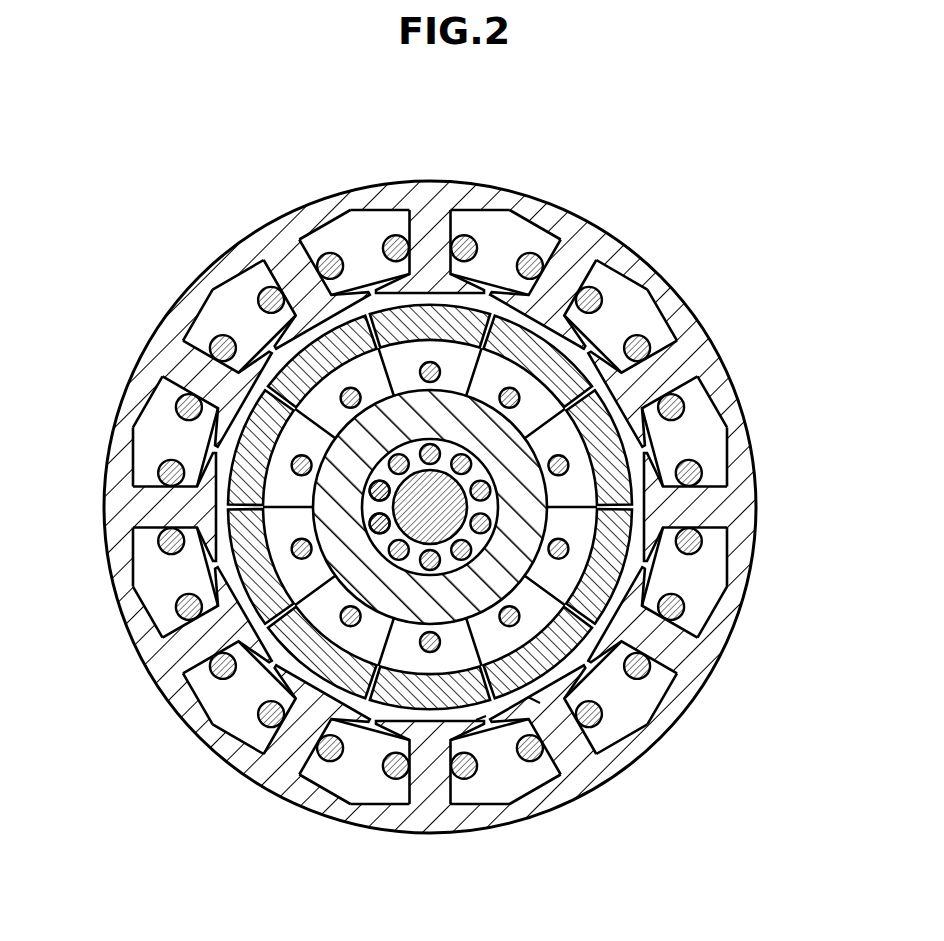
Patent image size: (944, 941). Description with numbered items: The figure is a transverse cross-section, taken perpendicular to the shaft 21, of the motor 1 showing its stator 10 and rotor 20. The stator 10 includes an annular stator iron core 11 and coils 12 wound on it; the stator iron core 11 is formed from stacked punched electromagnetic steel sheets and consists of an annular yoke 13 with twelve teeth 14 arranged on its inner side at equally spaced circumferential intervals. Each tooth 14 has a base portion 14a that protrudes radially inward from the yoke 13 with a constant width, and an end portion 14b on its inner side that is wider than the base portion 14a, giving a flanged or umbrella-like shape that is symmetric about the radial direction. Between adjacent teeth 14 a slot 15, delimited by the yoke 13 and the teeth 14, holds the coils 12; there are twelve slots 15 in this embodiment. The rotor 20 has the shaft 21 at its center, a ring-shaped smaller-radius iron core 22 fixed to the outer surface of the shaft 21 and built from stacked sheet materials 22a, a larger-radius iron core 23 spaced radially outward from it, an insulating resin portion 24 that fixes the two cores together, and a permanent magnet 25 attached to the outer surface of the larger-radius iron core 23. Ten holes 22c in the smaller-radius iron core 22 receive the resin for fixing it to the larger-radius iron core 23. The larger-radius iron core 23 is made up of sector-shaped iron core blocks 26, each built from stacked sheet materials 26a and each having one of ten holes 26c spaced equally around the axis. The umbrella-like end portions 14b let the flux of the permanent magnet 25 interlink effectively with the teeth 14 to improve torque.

The rotating electric machine 1 is at (627, 159).
The stator 10 is at (738, 393).
The stator iron core 11 is at (757, 485).
The coils 12 is at (689, 408).
The yoke 13 is at (740, 527).
The teeth 14 is at (822, 560).
The base portion 14a is at (697, 527).
The end portion 14b is at (722, 582).
The slot 15 is at (545, 250).
The rotor 20 is at (429, 709).
The shaft 21 is at (431, 505).
The smaller-radius iron core 22 is at (394, 575).
The sheet materials 22a is at (401, 453).
The holes 22c is at (369, 527).
The larger-radius iron core 23 is at (530, 700).
The insulating resin portion 24 is at (485, 437).
The permanent magnet 25 is at (478, 722).
The iron core blocks 26 is at (268, 378).
The sheet materials 26a is at (300, 360).
The holes 26c is at (327, 390).